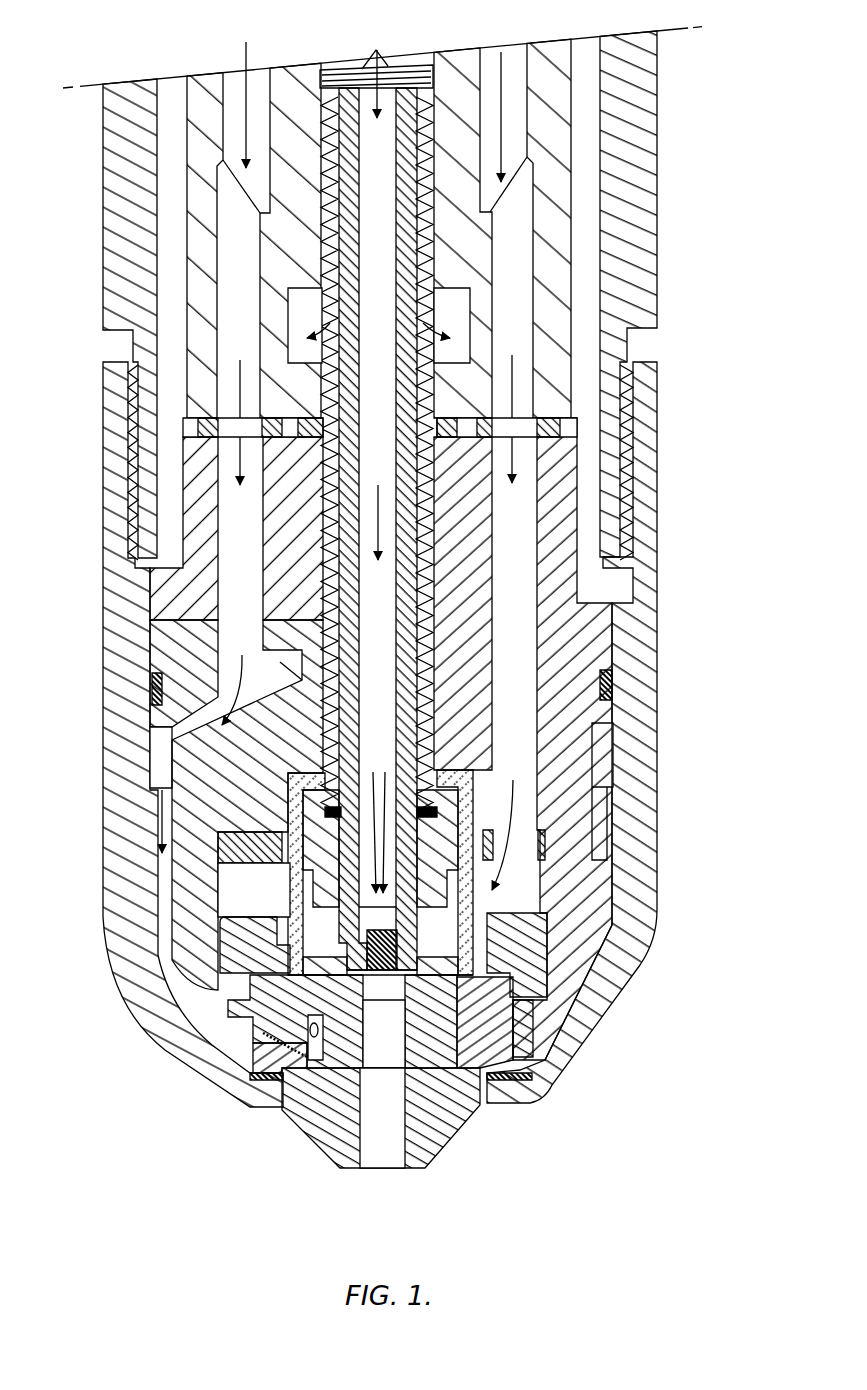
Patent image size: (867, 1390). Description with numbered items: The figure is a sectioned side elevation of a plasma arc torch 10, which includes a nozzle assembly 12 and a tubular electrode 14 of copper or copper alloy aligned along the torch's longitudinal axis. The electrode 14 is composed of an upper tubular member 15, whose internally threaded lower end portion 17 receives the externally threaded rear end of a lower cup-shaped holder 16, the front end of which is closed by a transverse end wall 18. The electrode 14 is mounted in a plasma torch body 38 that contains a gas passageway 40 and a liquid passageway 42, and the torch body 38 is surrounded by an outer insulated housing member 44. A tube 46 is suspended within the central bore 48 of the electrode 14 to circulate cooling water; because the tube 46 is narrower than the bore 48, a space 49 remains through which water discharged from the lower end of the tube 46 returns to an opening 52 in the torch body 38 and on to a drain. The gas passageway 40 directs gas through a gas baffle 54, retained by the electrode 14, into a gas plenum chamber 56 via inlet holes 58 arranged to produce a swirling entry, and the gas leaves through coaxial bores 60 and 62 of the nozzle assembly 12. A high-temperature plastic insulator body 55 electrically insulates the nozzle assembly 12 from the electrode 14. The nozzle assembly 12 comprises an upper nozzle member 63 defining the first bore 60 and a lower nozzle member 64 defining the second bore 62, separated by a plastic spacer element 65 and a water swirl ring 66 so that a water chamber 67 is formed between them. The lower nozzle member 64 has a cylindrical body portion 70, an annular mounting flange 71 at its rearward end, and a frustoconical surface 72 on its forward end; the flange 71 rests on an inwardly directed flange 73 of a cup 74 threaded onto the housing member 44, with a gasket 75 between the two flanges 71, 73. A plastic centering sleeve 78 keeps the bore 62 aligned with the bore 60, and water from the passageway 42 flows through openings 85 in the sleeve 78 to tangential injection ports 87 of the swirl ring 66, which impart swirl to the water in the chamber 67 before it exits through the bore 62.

The plasma arc torch 10 is at (692, 173).
The nozzle assembly 12 is at (402, 1178).
The tubular electrode 14 is at (263, 578).
The upper tubular member 15 is at (327, 620).
The holder 16 is at (330, 893).
The lower end portion 17 is at (492, 790).
The transverse end wall 18 is at (225, 1020).
The plasma torch body 38 is at (294, 86).
The gas passageway 40 is at (488, 55).
The liquid passageway 42 is at (235, 92).
The outer insulated housing member 44 is at (115, 125).
The tube 46 is at (401, 97).
The central bore 48 is at (398, 377).
The space 49 is at (415, 546).
The opening 52 is at (293, 325).
The gas baffle 54 is at (300, 775).
The insulator body 55 is at (152, 640).
The gas plenum chamber 56 is at (557, 985).
The inlet holes 58 is at (215, 1007).
The first bore 60 is at (385, 1062).
The second bore 62 is at (371, 1160).
The upper nozzle member 63 is at (523, 940).
The lower nozzle member 64 is at (322, 1137).
The plastic spacer element 65 is at (533, 1048).
The water swirl ring 66 is at (273, 1022).
The water chamber 67 is at (288, 1120).
The cylindrical body portion 70 is at (270, 1098).
The annular mounting flange 71 is at (513, 1063).
The frustoconical surface 72 is at (443, 1147).
The inwardly directed flange 73 is at (507, 1100).
The cup 74 is at (658, 724).
The gasket 75 is at (277, 1083).
The centering sleeve 78 is at (235, 1023).
The openings 85 is at (547, 985).
The injection ports 87 is at (365, 1065).